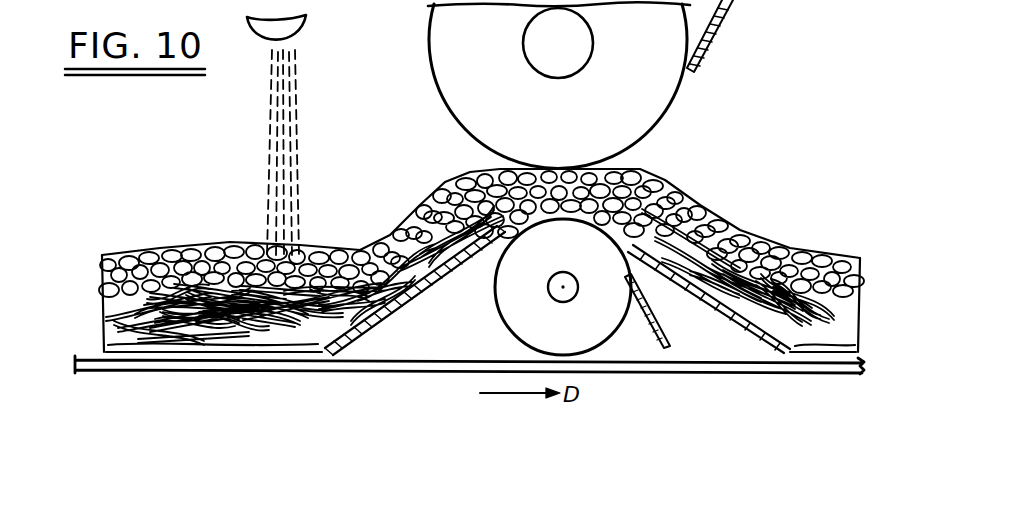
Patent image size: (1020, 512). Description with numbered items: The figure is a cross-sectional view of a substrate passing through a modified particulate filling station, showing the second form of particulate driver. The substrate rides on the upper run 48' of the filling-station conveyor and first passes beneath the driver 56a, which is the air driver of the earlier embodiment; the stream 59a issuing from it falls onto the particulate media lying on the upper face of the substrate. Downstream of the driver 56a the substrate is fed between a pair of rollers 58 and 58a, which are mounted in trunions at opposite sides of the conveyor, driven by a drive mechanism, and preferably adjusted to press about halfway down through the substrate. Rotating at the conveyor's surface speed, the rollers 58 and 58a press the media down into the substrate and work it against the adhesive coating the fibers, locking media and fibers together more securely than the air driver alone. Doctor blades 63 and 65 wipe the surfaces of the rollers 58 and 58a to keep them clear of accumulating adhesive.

The driver 56a is at (306, 30).
The spray of particles 59a is at (288, 118).
The roller 58 is at (606, 137).
The doctor blade 63 is at (712, 35).
The roller 58a is at (596, 259).
The doctor blade 65 is at (666, 332).
The upper run of conveyor 48' is at (469, 397).